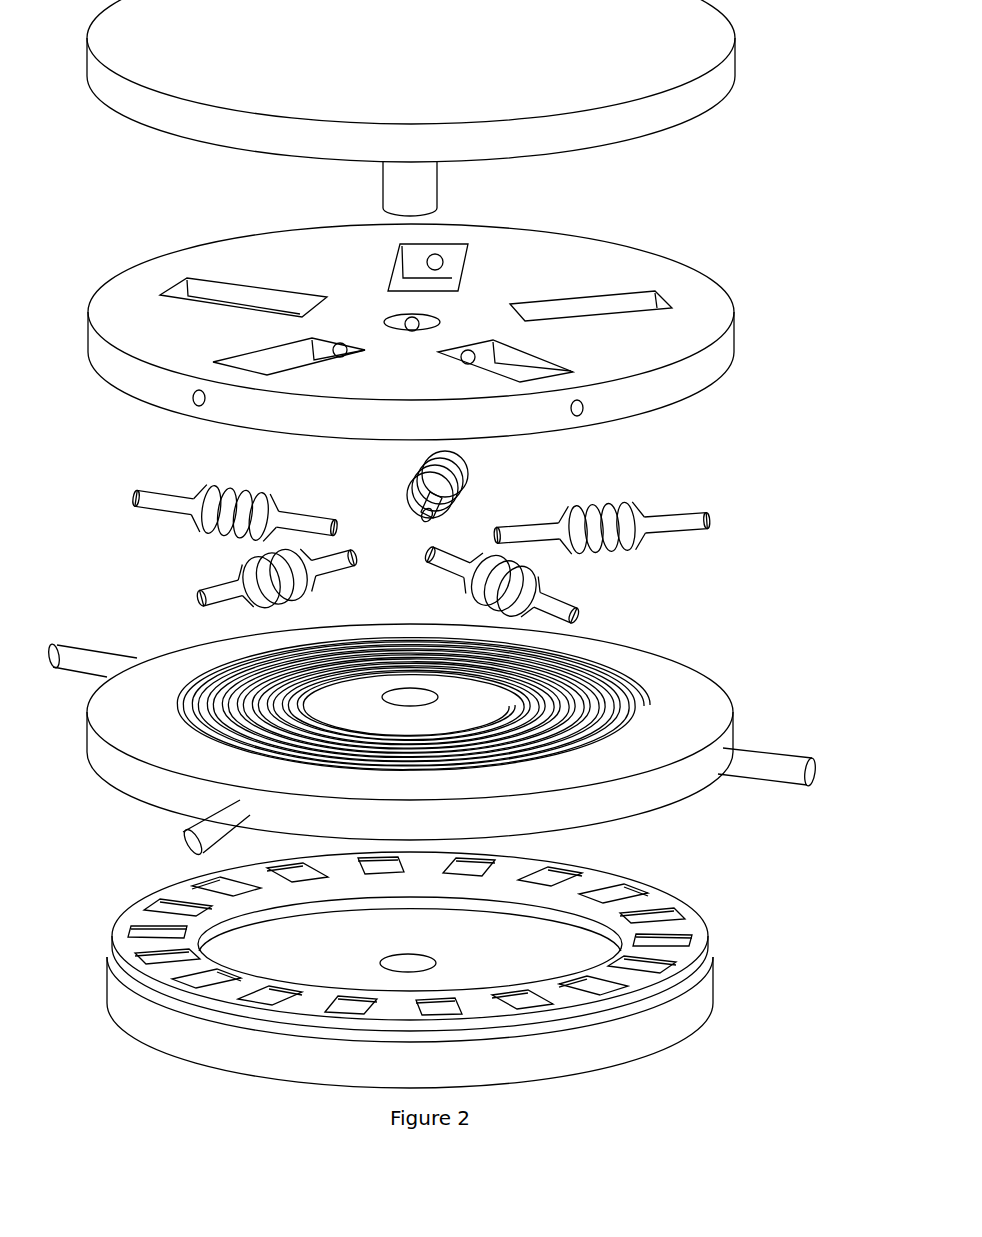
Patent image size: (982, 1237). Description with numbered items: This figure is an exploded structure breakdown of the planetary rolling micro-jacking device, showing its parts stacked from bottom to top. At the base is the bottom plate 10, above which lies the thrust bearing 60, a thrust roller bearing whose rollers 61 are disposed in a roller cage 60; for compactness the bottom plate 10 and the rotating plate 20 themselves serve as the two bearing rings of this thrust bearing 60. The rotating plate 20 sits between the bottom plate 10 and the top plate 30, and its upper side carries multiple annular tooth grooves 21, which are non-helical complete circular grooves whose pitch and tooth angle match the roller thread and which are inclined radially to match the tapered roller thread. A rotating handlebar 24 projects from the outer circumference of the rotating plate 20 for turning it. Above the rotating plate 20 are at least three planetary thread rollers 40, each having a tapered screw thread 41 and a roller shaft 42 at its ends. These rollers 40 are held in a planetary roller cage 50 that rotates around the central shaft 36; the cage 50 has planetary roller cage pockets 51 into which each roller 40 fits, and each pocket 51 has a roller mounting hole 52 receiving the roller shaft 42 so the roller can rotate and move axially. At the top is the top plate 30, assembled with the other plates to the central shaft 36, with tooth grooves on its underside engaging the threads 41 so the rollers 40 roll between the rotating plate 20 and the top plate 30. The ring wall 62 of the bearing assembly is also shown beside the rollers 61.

The bottom plate 10 is at (447, 1021).
The rotating plate 20 is at (432, 728).
The annular tooth grooves 21 is at (484, 684).
The rotating handlebar 24 is at (432, 750).
The top plate 30 is at (417, 90).
The central shaft 36 is at (558, 194).
The planetary thread rollers 40 is at (637, 497).
The tapered screw thread 41 is at (601, 528).
The roller shaft 42 is at (602, 527).
The planetary roller cage 50 is at (395, 350).
The planetary roller cage pockets 51 is at (364, 313).
The roller mounting hole 52 is at (345, 410).
The thrust bearing 60 is at (452, 941).
The roller 61 is at (460, 936).
The ring wall 62 is at (452, 980).